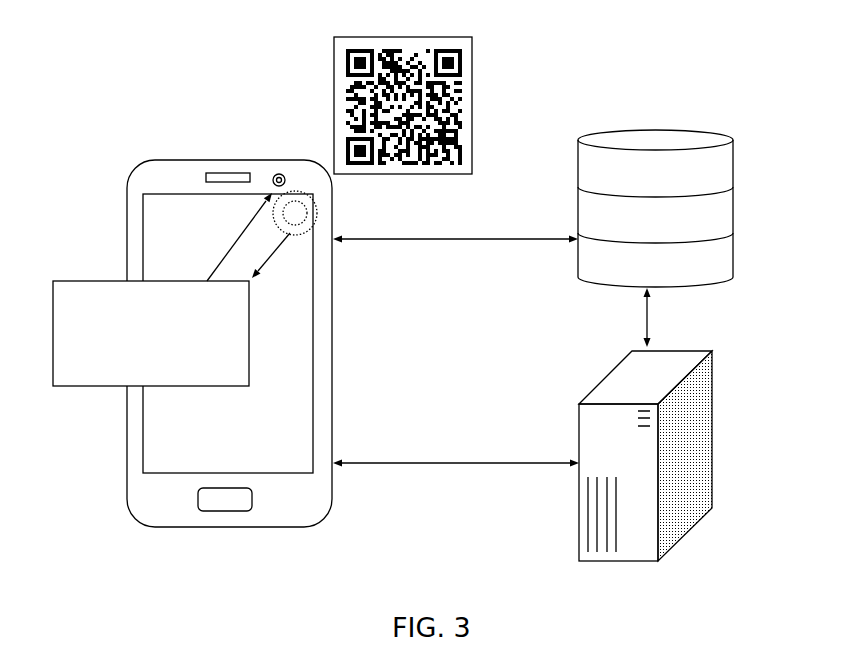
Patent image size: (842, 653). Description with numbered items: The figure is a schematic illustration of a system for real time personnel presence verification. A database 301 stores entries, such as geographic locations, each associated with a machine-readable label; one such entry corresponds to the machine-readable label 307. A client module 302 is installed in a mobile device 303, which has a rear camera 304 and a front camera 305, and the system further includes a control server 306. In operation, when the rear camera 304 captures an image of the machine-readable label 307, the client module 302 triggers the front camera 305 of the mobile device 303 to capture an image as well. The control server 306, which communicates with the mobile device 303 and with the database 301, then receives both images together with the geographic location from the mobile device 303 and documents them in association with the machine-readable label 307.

The database 301 is at (655, 188).
The client module 302 is at (171, 289).
The mobile device 303 is at (229, 343).
The rear camera 304 is at (296, 180).
The front camera 305 is at (268, 166).
The control server 306 is at (610, 456).
The machine-readable label 307 is at (434, 105).